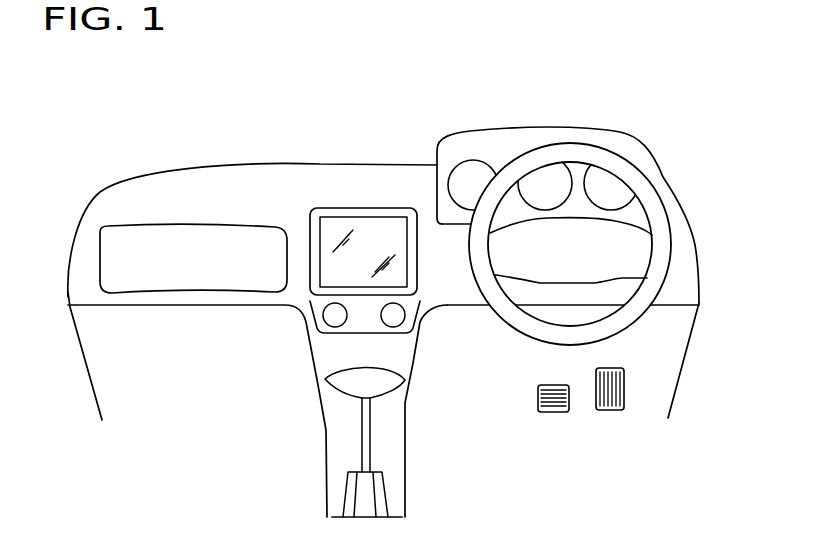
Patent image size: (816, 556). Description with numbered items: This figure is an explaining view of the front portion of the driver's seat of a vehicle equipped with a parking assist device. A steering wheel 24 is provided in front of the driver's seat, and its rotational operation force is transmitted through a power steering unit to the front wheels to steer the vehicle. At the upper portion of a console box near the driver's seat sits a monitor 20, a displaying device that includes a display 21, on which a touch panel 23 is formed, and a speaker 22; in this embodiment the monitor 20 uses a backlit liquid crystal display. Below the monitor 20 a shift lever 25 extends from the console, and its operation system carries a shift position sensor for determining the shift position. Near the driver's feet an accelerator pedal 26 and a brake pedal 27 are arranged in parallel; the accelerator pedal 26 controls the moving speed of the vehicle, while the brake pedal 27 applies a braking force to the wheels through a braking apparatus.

The monitor 20 is at (376, 218).
The display 21 is at (363, 252).
The speaker 22 is at (365, 317).
The touch panel 23 is at (364, 253).
The steering wheel 24 is at (657, 215).
The shift lever 25 is at (335, 380).
The accelerator pedal 26 is at (627, 390).
The brake pedal 27 is at (553, 385).